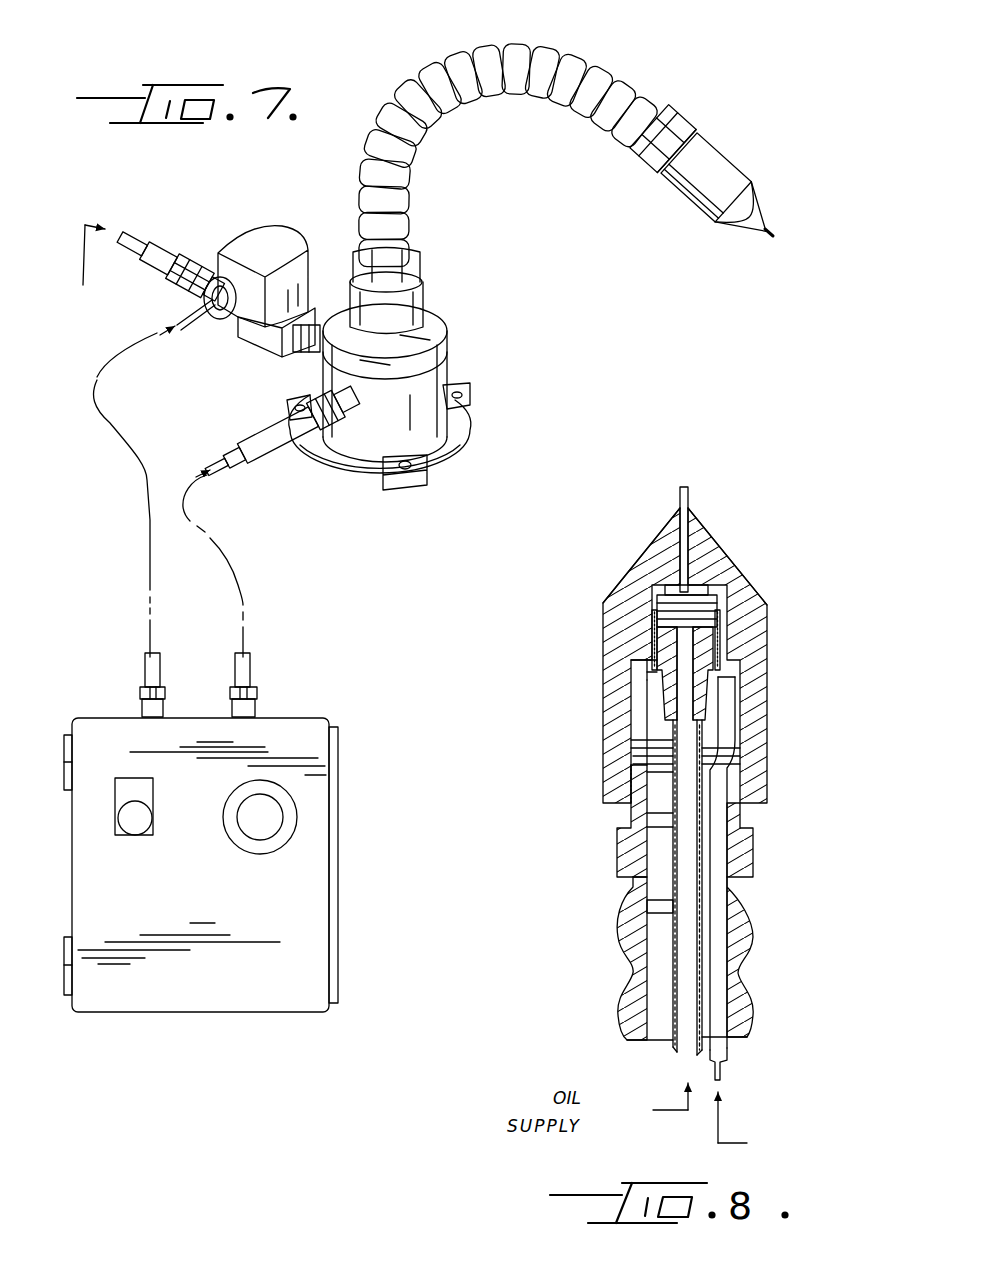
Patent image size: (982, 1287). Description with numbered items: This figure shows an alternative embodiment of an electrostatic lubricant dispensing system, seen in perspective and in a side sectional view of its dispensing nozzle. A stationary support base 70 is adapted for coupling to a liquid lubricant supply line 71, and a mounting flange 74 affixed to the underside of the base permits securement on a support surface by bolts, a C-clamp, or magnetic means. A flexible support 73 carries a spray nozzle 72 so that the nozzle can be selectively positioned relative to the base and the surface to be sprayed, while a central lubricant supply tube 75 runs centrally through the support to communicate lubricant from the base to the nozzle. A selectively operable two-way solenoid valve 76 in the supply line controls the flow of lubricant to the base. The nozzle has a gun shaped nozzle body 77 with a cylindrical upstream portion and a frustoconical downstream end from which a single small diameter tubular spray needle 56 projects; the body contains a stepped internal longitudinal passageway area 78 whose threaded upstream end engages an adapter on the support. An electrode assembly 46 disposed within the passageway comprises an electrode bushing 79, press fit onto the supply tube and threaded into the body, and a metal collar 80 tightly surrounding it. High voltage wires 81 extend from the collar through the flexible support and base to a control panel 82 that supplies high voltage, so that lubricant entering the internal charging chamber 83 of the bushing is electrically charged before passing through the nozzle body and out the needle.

In FIG. 8, the electrode assembly 46 is at (740, 700).
In FIG. 7, the tubular spray needle 56 is at (778, 232).
In FIG. 8, the tubular spray needle 56 is at (692, 496).
In FIG. 7, the stationary support base 70 is at (440, 368).
In FIG. 7, the liquid lubricant supply line 71 is at (147, 232).
In FIG. 7, the spray nozzle 72 is at (715, 160).
In FIG. 8, the spray nozzle 72 is at (745, 566).
In FIG. 7, the flexible support 73 is at (565, 62).
In FIG. 8, the flexible support 73 is at (740, 1000).
In FIG. 7, the mounting flange 74 is at (440, 453).
In FIG. 8, the central lubricant supply tube 75 is at (660, 823).
In FIG. 7, the two-way solenoid valve 76 is at (275, 240).
In FIG. 7, the nozzle body 77 is at (697, 200).
In FIG. 8, the nozzle body 77 is at (603, 635).
In FIG. 8, the internal longitudinal passageway area 78 is at (645, 715).
In FIG. 8, the electrode bushing 79 is at (722, 636).
In FIG. 8, the metal collar 80 is at (653, 678).
In FIG. 7, the high voltage wires 81 is at (290, 440).
In FIG. 8, the high voltage wires 81 is at (728, 728).
In FIG. 7, the control panel 82 is at (295, 725).
In FIG. 8, the internal charging chamber 83 is at (690, 645).